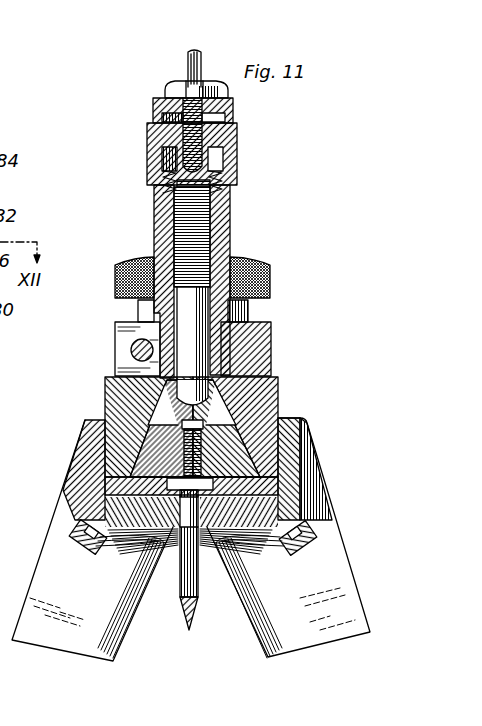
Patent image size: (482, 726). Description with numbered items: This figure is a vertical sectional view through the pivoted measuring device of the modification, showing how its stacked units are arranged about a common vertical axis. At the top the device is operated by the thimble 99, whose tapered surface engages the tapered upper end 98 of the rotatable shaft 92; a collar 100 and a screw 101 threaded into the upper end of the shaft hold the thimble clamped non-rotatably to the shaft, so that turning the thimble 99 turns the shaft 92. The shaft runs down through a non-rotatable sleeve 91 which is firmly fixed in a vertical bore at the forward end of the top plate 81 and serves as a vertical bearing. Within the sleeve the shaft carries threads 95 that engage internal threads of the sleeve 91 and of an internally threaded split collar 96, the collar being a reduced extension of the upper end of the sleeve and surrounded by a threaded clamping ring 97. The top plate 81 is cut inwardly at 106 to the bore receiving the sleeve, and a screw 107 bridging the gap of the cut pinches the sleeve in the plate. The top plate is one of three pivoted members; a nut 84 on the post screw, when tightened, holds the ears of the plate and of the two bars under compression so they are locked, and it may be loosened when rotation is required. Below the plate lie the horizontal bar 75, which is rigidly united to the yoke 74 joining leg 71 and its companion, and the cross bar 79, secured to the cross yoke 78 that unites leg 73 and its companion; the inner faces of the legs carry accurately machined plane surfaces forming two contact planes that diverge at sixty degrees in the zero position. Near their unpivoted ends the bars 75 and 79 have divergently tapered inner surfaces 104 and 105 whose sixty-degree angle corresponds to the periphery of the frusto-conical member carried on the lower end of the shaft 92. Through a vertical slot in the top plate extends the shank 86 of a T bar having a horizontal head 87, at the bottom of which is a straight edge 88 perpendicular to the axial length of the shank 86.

The shank 86 is at (196, 54).
The screw 101 is at (204, 88).
The collar 100 is at (162, 99).
The thimble 99 is at (237, 139).
The tapered upper end of shaft 98 is at (234, 126).
The split collar 96 is at (215, 167).
The clamping ring 97 is at (237, 180).
The threaded portion of shaft 95 is at (210, 220).
The sleeve 91 is at (163, 207).
The shaft 92 is at (197, 348).
The nut 84 is at (270, 270).
The top plate 81 is at (260, 323).
The cut 106 is at (125, 335).
The screw 107 is at (132, 353).
The cross bar 79 is at (104, 415).
The horizontal bar 75 is at (278, 410).
The tapered inner surface 105 is at (160, 410).
The tapered inner surface 104 is at (218, 418).
The leg 73 is at (40, 576).
The cross yoke 78 is at (78, 460).
The leg 71 is at (337, 590).
The yoke 74 is at (318, 480).
The horizontal head 87 is at (182, 600).
The straight edge 88 is at (189, 632).